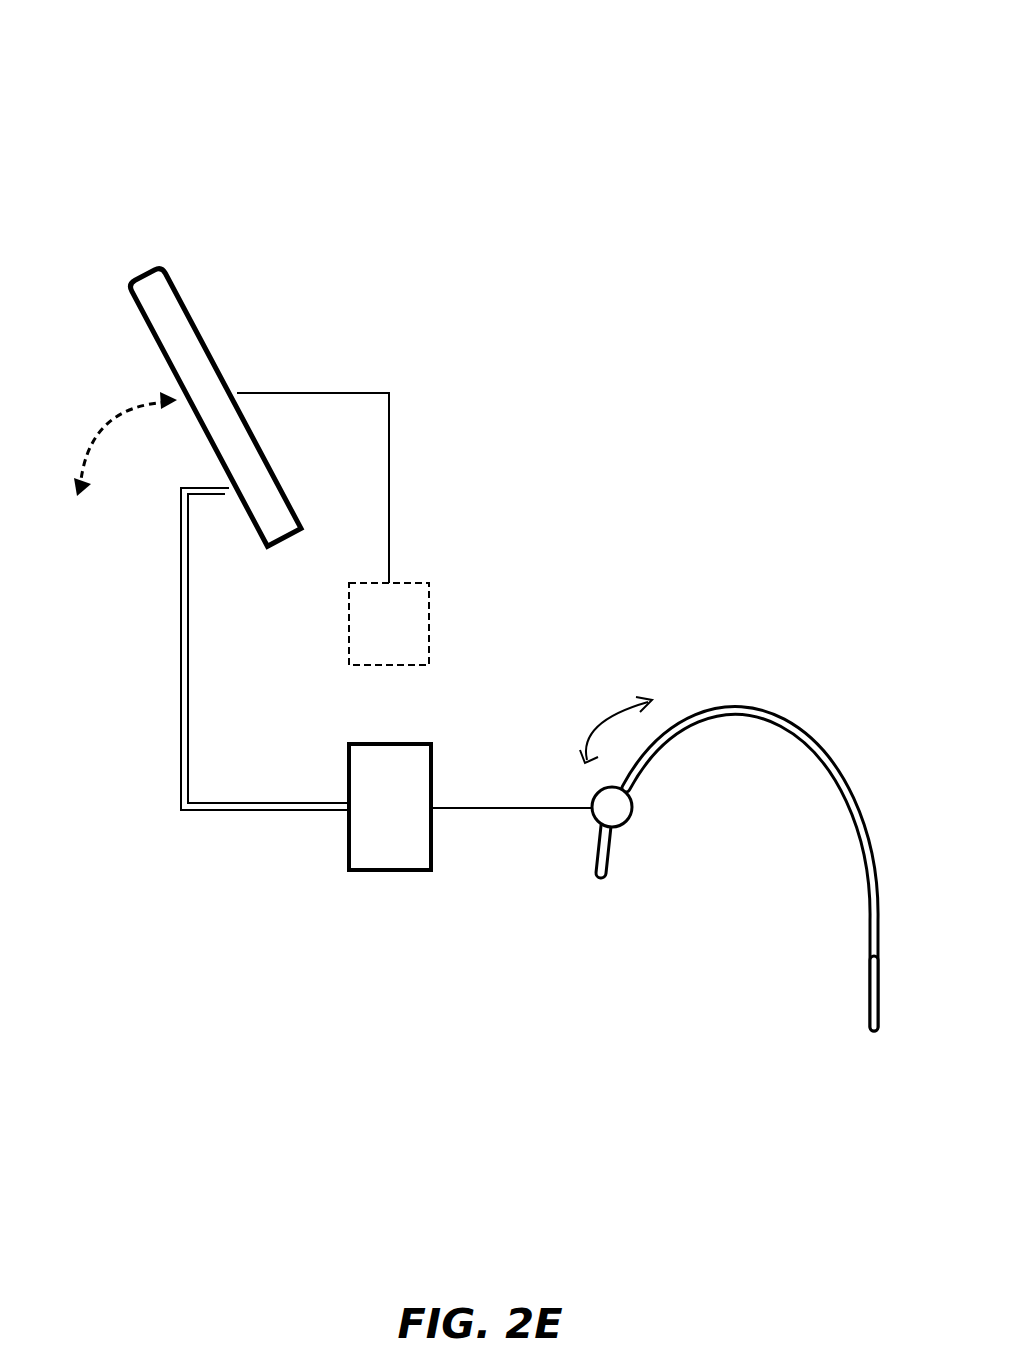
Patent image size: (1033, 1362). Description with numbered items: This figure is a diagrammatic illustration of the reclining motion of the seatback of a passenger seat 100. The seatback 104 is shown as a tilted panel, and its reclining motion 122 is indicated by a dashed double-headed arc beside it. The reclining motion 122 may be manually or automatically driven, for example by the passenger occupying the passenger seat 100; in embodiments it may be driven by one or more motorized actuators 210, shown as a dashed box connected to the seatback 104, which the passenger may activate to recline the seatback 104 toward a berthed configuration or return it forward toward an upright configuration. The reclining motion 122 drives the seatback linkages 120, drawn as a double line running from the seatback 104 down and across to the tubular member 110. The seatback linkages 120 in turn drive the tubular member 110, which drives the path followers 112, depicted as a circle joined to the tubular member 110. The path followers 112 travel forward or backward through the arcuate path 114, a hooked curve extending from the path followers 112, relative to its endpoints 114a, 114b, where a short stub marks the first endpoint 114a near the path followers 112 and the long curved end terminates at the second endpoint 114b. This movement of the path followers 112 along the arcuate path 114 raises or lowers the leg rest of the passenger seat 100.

The passenger seat 100 is at (84, 88).
The seatback 104 is at (188, 332).
The tubular member 110 is at (368, 825).
The path followers 112 is at (618, 810).
The arcuate path 114 is at (764, 722).
The endpoint of arcuate path 114a is at (598, 880).
The endpoint of arcuate path 114b is at (870, 1015).
The seatback linkages 120 is at (202, 807).
The reclining motion 122 is at (113, 420).
The motorized actuators 210 is at (368, 640).